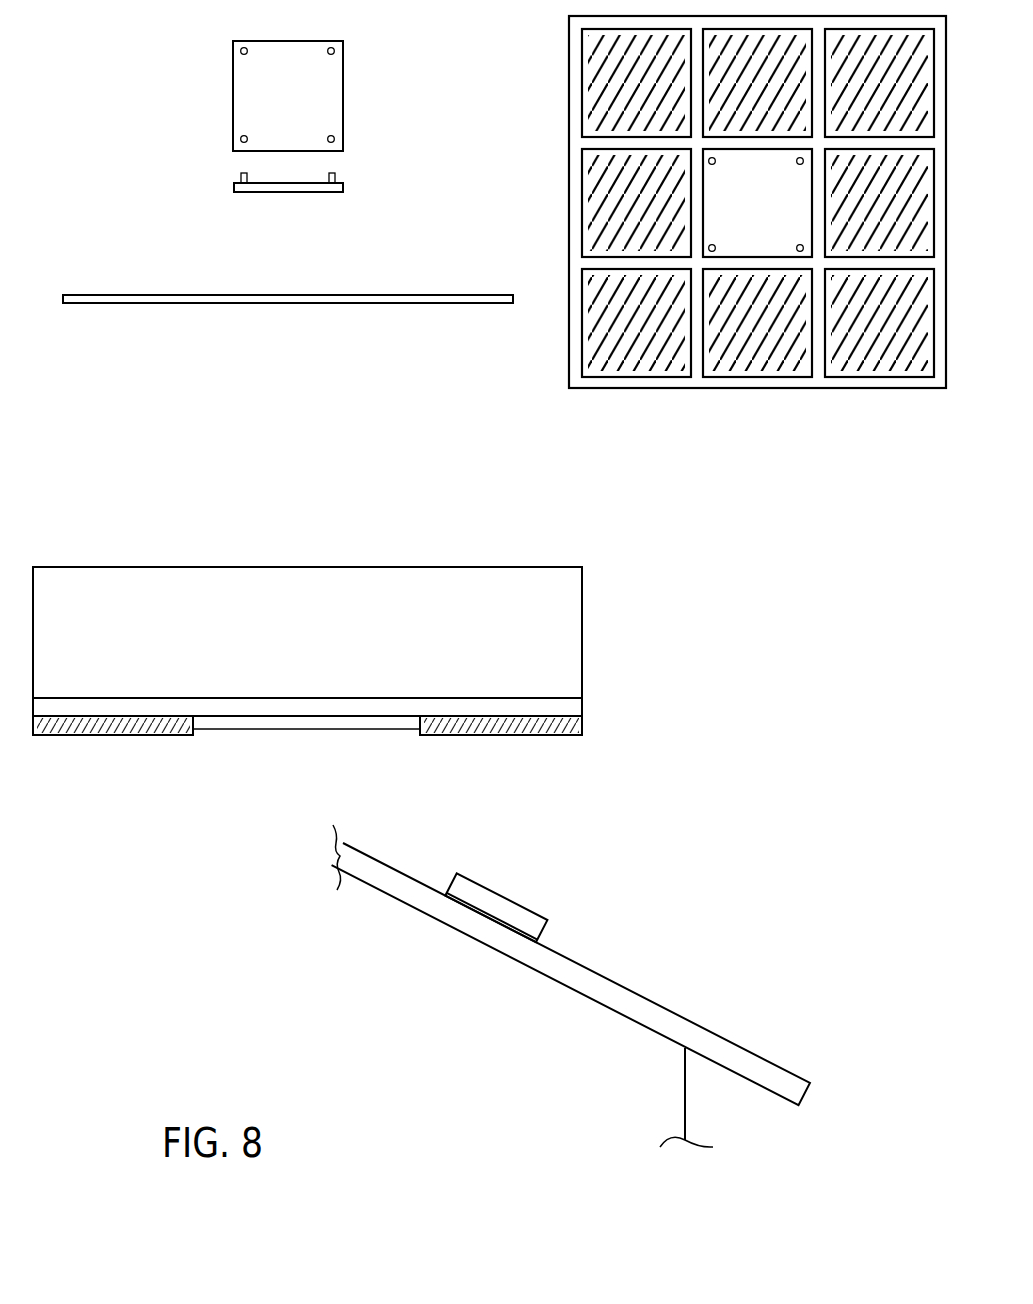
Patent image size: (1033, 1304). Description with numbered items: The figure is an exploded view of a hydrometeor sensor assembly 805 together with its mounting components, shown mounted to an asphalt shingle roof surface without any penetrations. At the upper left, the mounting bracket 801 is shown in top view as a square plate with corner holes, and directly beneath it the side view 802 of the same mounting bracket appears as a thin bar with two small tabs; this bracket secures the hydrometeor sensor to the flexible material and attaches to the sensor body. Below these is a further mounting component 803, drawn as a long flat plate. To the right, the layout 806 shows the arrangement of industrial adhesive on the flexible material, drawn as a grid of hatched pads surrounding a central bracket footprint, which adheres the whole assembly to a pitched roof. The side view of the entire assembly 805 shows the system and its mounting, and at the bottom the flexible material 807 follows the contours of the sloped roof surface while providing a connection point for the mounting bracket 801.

The mounting bracket 801 is at (323, 98).
The side view of mounting bracket 802 is at (234, 190).
The mounting component 803 is at (384, 295).
The hydrometeor sensor assembly 805 is at (552, 643).
The layout of industrial adhesive 806 is at (750, 402).
The flexible material 807 is at (496, 907).